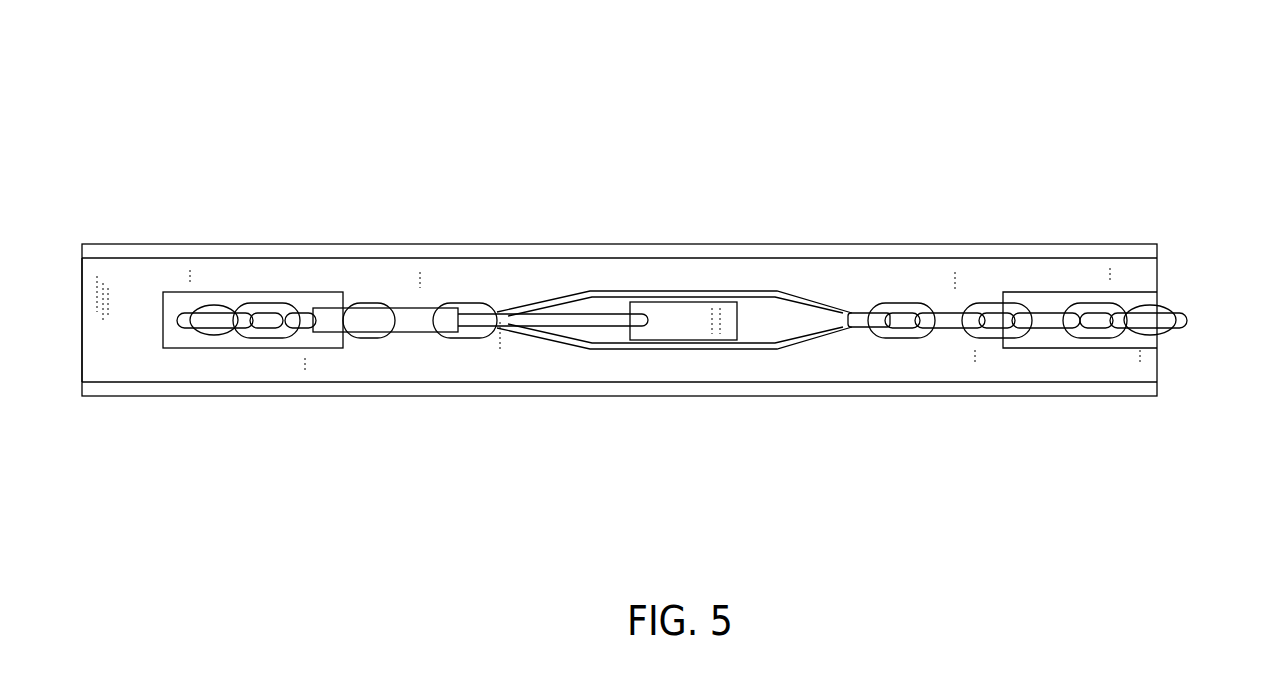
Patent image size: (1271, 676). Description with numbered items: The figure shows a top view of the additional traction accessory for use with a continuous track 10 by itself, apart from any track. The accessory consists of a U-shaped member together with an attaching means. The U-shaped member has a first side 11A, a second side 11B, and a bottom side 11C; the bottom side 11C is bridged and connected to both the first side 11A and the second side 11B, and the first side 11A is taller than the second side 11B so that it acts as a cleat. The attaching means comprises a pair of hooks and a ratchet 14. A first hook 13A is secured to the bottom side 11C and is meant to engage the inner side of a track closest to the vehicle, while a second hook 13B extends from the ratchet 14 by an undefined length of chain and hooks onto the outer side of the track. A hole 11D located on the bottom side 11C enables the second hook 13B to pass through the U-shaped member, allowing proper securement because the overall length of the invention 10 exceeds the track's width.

The additional traction accessory for use with a continuous track 10 is at (975, 128).
The first side 11A is at (357, 245).
The second side 11B is at (282, 397).
The bottom side 11C is at (140, 365).
The hole 11D is at (262, 292).
The first hook 13A is at (1167, 332).
The second hook 13B is at (217, 305).
The ratchet 14 is at (598, 292).